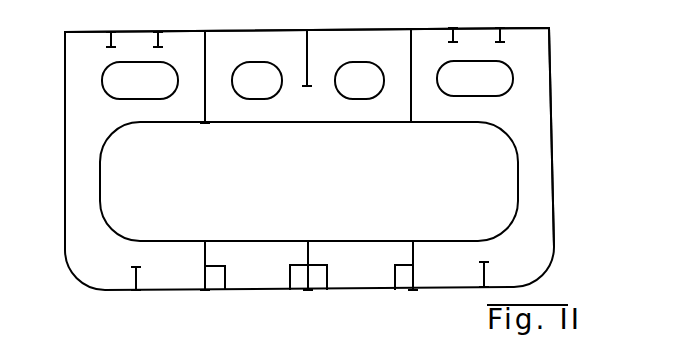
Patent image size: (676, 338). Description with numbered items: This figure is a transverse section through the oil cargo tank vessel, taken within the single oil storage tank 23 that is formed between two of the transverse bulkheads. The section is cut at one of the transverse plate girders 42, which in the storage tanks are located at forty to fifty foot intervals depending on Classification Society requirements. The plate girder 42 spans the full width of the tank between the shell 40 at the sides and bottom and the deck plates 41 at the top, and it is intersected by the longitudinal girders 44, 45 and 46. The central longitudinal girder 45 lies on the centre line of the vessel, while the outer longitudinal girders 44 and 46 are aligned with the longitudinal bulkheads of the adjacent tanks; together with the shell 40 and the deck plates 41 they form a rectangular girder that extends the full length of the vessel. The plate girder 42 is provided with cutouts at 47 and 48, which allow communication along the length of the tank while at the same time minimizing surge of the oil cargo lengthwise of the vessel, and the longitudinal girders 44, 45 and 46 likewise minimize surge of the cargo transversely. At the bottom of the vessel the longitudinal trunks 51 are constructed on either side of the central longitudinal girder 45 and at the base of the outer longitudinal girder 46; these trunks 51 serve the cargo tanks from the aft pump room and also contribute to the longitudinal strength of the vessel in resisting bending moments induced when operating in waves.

The shell 40 is at (264, 292).
The deck plates 41 is at (369, 27).
The transverse plate girder 42 is at (528, 123).
The oil storage tank 23 is at (507, 215).
The outer longitudinal girder 44 is at (411, 60).
The central longitudinal girder 45 is at (308, 68).
The outer longitudinal girder 46 is at (206, 70).
The cutout 47 is at (510, 82).
The cutout 48 is at (358, 92).
The longitudinal trunk 51 is at (220, 282).